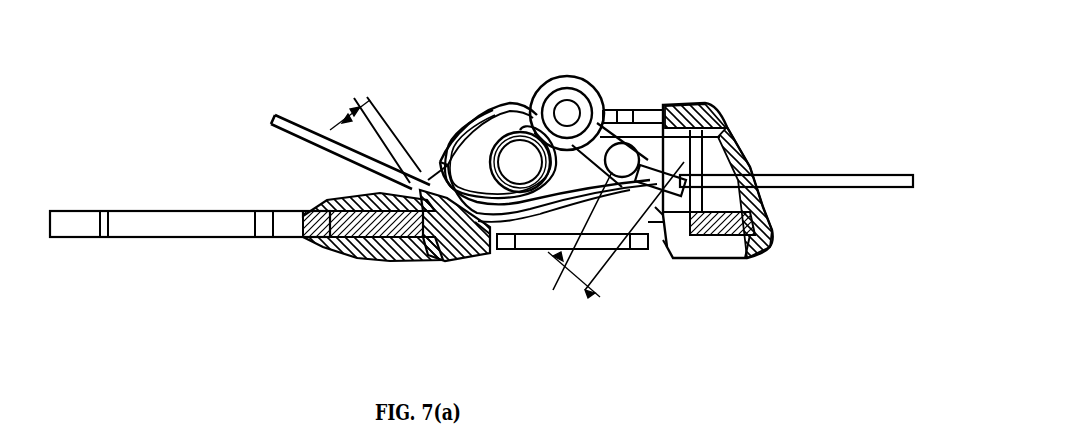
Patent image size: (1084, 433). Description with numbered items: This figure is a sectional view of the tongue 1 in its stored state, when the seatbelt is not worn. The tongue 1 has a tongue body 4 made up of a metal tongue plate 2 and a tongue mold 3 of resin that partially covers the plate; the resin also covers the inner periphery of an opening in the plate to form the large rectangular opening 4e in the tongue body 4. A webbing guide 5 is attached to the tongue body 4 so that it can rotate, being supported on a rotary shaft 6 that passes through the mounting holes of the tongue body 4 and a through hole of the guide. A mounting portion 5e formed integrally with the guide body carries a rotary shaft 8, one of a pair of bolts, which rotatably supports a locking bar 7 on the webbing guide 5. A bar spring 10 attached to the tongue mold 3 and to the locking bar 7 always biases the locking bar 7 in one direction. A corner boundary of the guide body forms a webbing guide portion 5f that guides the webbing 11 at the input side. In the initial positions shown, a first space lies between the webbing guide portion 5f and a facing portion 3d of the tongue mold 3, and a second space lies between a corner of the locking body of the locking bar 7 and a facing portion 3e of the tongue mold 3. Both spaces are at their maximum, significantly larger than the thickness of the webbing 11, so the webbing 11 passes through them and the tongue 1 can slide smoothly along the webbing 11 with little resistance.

The tongue 1 is at (292, 270).
The tongue plate 2 is at (177, 228).
The tongue mold 3 is at (713, 215).
The portion of the tongue mold 3d is at (432, 263).
The portion of the tongue mold 3e is at (668, 243).
The tongue body 4 is at (396, 272).
The large rectangular opening 4e is at (497, 243).
The webbing guide 5 is at (507, 107).
The mounting portion 5e is at (593, 110).
The webbing guide portion 5f is at (445, 160).
The rotary shaft 6 is at (518, 150).
The locking bar 7 is at (622, 110).
The rotary shaft 8 is at (567, 110).
The bar spring 10 is at (688, 153).
The webbing 11 is at (310, 136).